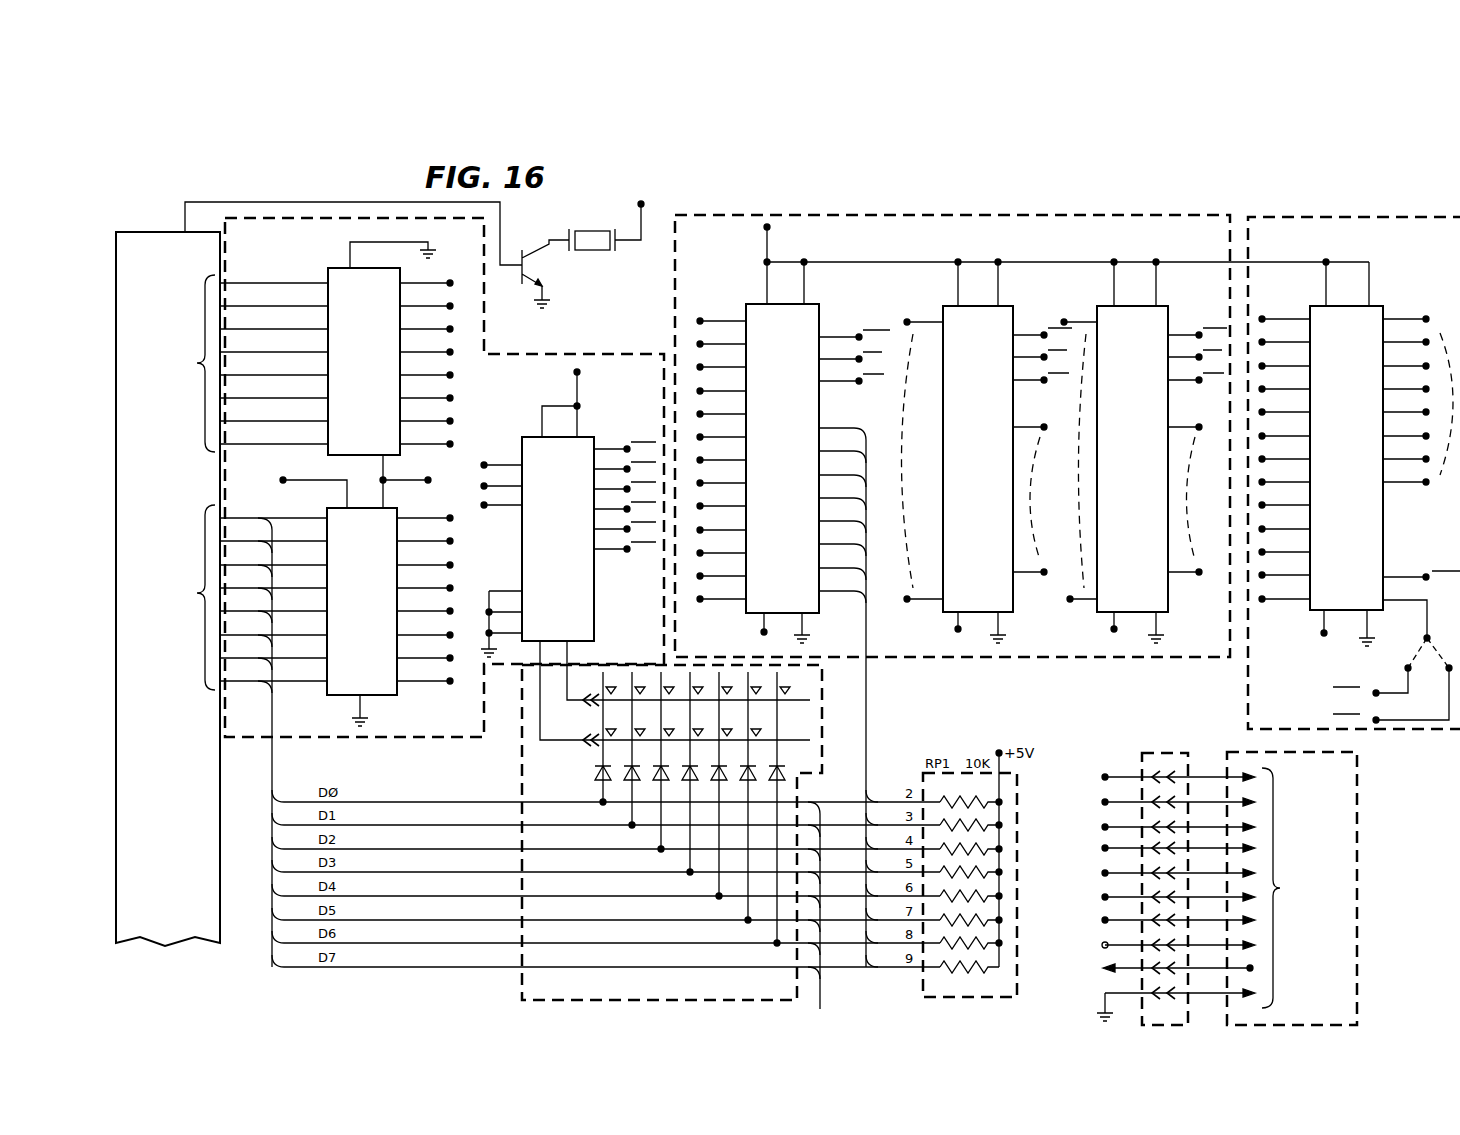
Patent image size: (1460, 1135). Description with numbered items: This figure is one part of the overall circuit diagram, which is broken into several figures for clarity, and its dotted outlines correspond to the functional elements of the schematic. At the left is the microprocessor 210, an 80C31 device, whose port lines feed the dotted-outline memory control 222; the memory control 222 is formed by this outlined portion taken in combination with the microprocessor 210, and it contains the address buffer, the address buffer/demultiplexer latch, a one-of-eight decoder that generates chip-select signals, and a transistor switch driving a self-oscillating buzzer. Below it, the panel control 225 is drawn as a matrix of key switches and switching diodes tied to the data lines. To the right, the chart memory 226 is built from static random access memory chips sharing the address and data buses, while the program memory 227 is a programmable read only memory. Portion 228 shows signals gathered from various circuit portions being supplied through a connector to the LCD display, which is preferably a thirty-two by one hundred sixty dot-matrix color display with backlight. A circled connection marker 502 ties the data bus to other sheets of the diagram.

The microprocessor 210 is at (116, 272).
The memory control 222 is at (331, 214).
The panel control 225 is at (637, 1002).
The chart memory 226 is at (1003, 214).
The program memory 227 is at (1352, 215).
The LCD display signal portion 228 is at (1357, 926).
The data bus connection 502 is at (818, 926).